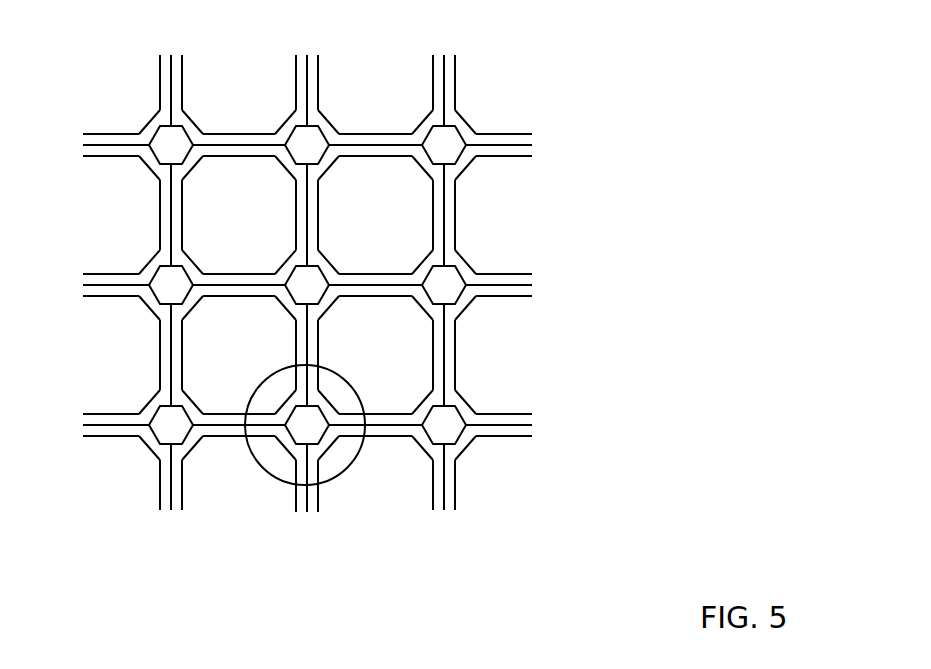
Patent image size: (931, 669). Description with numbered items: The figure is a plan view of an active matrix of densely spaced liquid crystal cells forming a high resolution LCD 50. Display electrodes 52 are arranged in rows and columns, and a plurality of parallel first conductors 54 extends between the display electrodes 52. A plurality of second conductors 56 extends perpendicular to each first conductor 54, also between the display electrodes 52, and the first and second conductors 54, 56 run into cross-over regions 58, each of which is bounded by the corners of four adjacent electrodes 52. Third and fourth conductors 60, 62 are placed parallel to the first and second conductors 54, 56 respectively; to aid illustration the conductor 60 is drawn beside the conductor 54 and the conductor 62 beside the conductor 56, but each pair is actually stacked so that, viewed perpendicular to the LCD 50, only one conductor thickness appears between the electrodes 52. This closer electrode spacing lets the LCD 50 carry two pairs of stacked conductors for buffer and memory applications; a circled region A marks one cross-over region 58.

The LCD 50 is at (344, 303).
The display electrodes 52 is at (435, 212).
The first conductors 54 is at (518, 275).
The second conductors 56 is at (295, 505).
The cross-over regions 58 is at (284, 442).
The third conductor 60 is at (518, 298).
The fourth conductor 62 is at (318, 505).
The detail region A is at (354, 382).